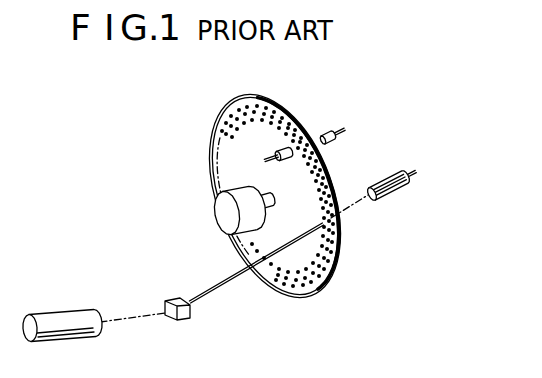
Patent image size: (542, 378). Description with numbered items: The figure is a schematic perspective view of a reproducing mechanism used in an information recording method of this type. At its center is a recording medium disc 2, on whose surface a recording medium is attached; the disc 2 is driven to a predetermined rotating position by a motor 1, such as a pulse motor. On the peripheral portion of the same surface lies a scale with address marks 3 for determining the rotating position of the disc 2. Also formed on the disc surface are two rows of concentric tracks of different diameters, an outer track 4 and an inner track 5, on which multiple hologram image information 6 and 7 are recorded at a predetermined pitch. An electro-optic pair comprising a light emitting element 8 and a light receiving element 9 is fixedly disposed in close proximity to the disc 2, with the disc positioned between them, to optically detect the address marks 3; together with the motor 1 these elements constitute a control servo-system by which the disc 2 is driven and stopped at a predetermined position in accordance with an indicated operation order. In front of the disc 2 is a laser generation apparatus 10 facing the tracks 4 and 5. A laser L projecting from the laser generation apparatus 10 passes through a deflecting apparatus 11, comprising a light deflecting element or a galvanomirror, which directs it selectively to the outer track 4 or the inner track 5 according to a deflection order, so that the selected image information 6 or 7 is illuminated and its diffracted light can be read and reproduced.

The motor 1 is at (218, 220).
The recording medium disc 2 is at (213, 152).
The address marks 3 is at (245, 103).
The outer track 4 is at (215, 173).
The inner track 5 is at (214, 202).
The hologram image information 6 is at (336, 195).
The hologram image information 7 is at (324, 202).
The light emitting element 8 is at (278, 150).
The light receiving element 9 is at (330, 131).
The laser generation apparatus 10 is at (63, 312).
The deflecting apparatus 11 is at (182, 320).
The laser L is at (130, 322).